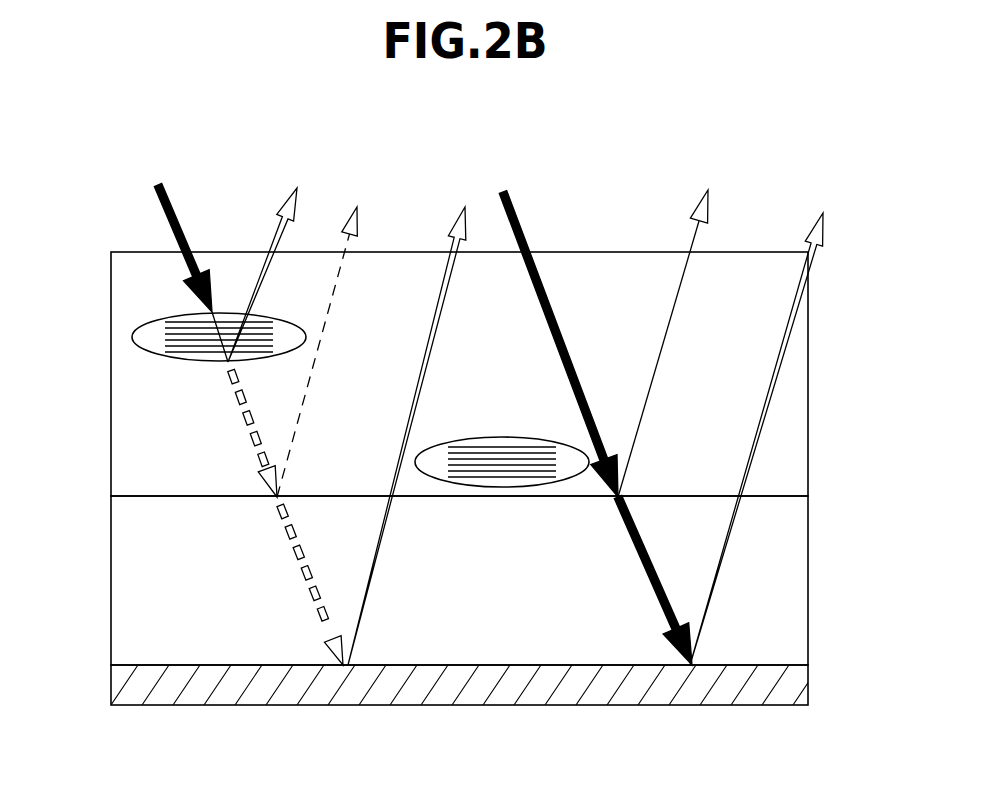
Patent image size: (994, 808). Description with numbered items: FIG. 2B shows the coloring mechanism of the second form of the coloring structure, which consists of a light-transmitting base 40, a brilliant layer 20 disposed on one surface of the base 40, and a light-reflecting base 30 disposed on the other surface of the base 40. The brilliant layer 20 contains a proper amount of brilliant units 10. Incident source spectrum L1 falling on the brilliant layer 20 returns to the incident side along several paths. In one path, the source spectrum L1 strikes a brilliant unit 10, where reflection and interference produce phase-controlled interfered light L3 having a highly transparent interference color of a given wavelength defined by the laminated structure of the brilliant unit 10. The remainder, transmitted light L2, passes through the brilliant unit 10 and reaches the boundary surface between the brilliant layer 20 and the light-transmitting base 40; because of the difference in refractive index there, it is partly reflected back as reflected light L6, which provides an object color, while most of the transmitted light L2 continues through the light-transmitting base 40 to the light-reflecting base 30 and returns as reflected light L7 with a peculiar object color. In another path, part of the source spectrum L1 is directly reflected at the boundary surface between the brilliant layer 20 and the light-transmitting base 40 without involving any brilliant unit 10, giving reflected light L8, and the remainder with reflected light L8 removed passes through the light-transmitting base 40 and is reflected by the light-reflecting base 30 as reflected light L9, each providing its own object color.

The brilliant unit 10 is at (173, 358).
The brilliant layer 20 is at (772, 465).
The light-reflecting base 30 is at (767, 705).
The light-transmitting base 40 is at (770, 632).
The source spectrum L1 is at (408, 424).
The transmitted light L2 is at (275, 517).
The interfered light L3 is at (271, 247).
The reflected light L6 is at (335, 322).
The reflected light L7 is at (414, 409).
The reflected light L8 is at (678, 319).
The reflected light L9 is at (771, 403).